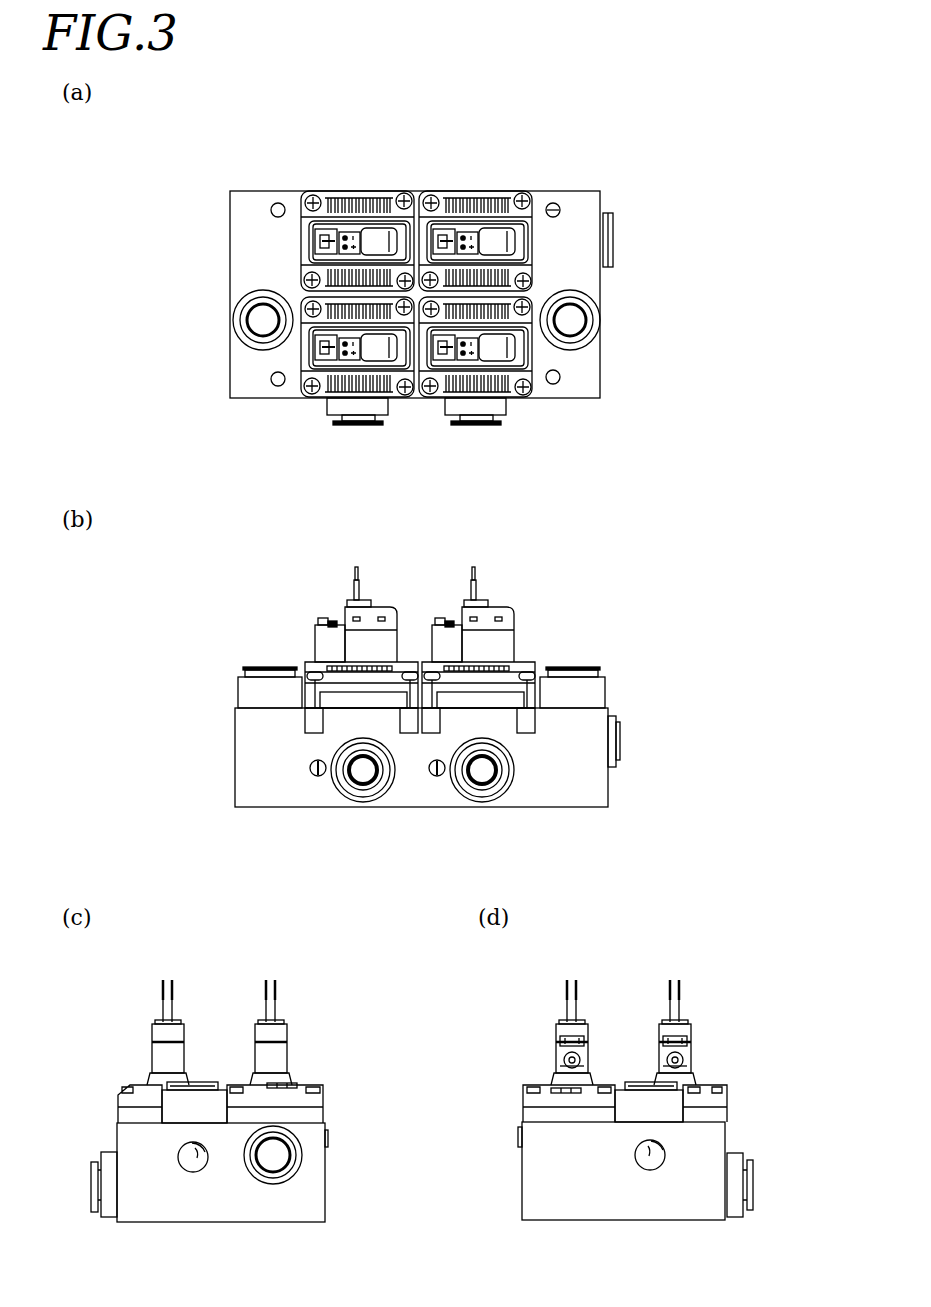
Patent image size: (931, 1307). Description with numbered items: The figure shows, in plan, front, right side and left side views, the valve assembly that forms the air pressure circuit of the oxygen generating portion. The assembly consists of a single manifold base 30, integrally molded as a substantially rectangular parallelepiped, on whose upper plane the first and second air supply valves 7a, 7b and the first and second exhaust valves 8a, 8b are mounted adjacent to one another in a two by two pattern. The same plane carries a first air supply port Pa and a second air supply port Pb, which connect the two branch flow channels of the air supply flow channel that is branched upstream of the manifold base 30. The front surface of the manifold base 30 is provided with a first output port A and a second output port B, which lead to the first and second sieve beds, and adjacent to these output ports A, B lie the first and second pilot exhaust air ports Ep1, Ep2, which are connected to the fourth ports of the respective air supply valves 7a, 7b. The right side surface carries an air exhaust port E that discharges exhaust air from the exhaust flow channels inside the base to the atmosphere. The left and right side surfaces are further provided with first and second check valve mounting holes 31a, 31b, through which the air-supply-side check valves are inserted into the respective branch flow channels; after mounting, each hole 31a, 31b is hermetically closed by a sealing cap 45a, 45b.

The first air supply valve 7a is at (342, 371).
The second air supply valve 7b is at (493, 371).
The first exhaust valve 8a is at (318, 185).
The second exhaust valve 8b is at (480, 185).
The manifold base 30 is at (253, 262).
The first check valve mounting hole 31a is at (707, 1201).
The second check valve mounting hole 31b is at (217, 1206).
The sealing cap 45a is at (648, 1162).
The sealing cap 45b is at (205, 1163).
The first air supply port Pa is at (252, 323).
The second air supply port Pb is at (575, 320).
The first output port A is at (357, 415).
The second output port B is at (475, 415).
The air exhaust port E is at (613, 243).
The first pilot exhaust air port Ep1 is at (320, 777).
The second pilot exhaust air port Ep2 is at (437, 777).